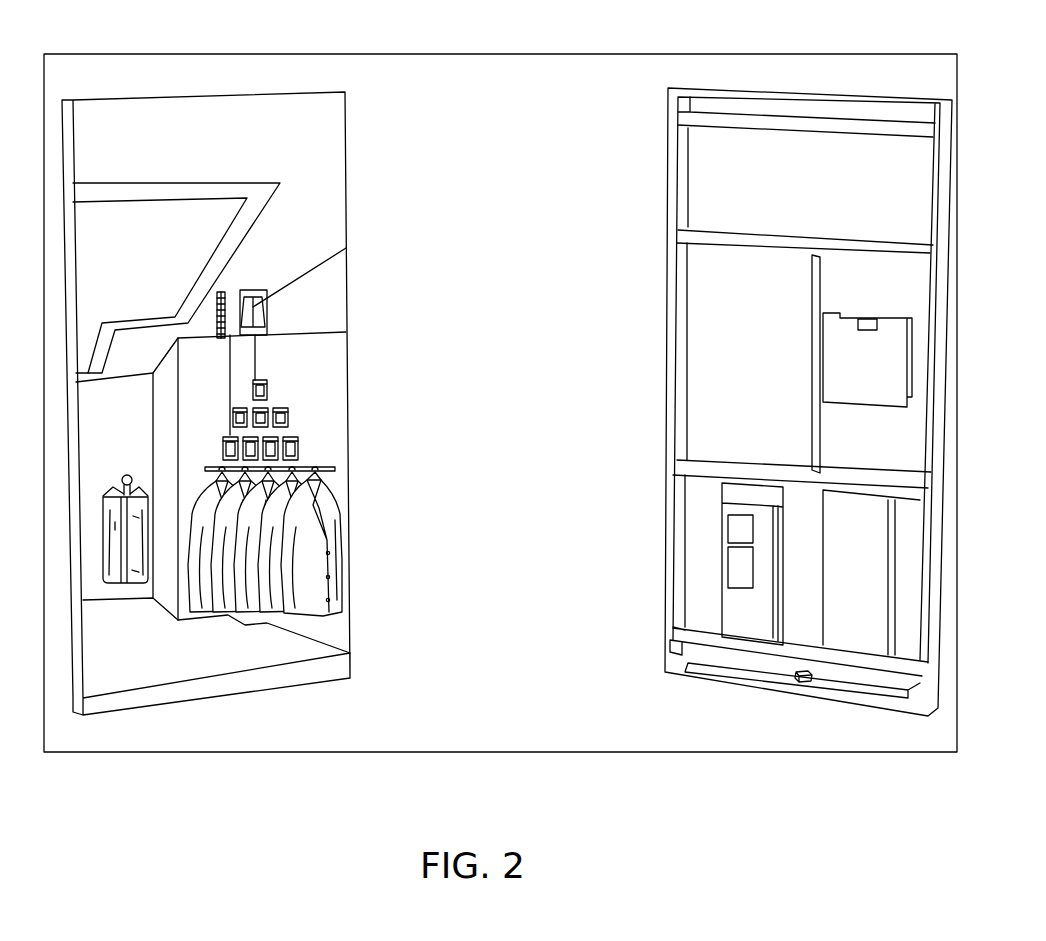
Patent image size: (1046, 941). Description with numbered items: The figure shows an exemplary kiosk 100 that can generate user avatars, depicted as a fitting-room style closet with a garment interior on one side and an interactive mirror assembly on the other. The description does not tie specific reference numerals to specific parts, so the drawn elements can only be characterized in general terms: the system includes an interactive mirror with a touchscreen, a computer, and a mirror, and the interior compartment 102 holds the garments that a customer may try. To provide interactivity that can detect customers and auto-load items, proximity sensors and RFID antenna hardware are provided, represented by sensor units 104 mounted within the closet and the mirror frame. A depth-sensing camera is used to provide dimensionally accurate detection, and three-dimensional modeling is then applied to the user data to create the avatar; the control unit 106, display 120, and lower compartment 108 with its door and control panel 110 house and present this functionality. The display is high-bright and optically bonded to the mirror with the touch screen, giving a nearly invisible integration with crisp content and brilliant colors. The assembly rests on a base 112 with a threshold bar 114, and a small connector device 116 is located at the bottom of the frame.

The closet system 100 is at (144, 77).
The closet interior compartment 102 is at (258, 165).
The sensor unit 104 is at (268, 310).
The control unit 106 is at (868, 362).
The lower compartment 108 is at (857, 527).
The door with control panel 110 is at (745, 558).
The base 112 is at (692, 668).
The threshold bar 114 is at (707, 675).
The connector device 116 is at (795, 678).
The display panel 120 is at (945, 347).